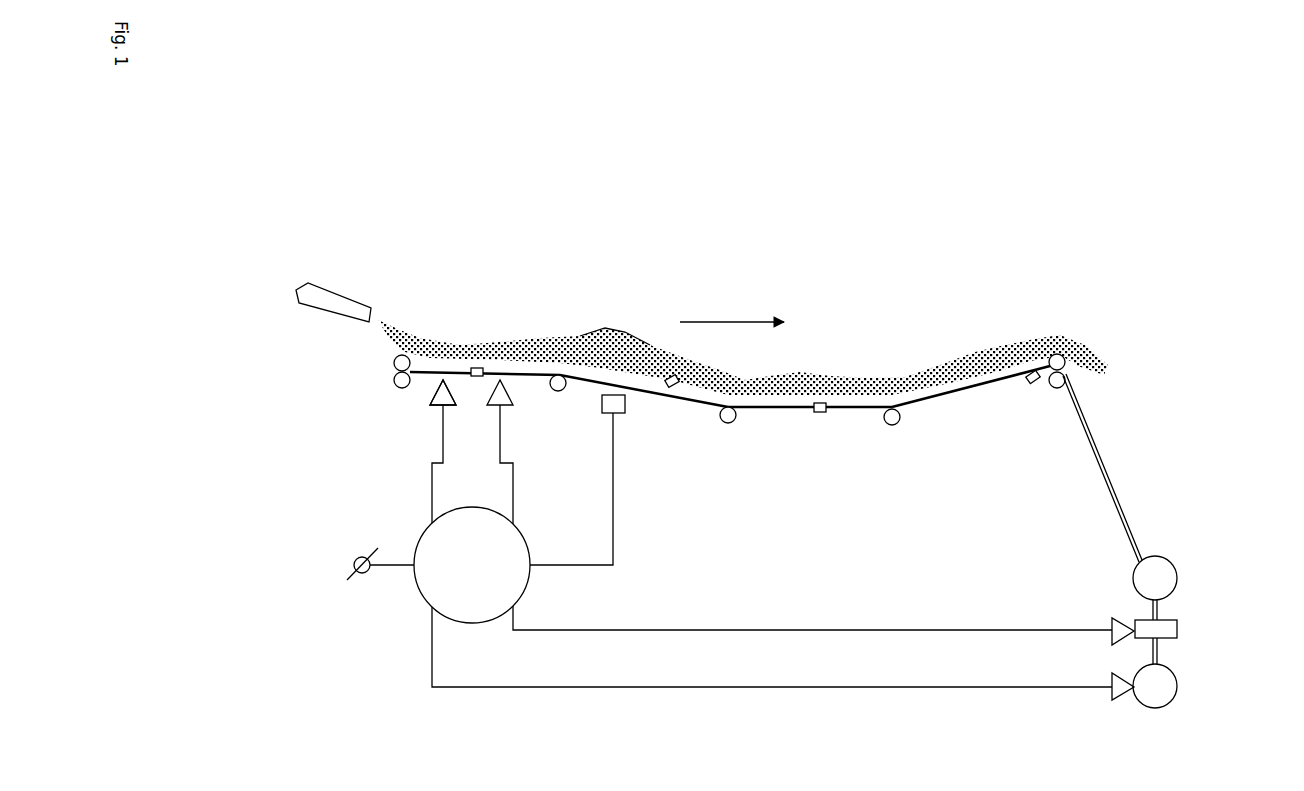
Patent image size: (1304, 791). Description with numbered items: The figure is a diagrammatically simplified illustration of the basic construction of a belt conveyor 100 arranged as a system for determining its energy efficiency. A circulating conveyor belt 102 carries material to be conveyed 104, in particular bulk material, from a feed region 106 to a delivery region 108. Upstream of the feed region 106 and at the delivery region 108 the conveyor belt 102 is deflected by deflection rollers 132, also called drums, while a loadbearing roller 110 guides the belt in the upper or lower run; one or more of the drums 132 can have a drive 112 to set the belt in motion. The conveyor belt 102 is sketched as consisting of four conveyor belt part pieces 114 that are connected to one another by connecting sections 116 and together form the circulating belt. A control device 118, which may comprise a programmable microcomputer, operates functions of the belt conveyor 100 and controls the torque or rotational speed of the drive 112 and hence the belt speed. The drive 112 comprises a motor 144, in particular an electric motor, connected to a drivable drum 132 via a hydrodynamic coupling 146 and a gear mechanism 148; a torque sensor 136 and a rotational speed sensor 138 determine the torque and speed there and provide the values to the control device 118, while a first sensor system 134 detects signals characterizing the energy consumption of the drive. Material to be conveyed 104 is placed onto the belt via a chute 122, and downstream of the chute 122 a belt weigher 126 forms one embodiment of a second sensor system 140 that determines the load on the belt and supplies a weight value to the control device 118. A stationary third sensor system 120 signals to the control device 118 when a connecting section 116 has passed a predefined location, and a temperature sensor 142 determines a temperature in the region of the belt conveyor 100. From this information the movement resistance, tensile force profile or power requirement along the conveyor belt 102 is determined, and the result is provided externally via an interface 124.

The belt conveyor 100 is at (383, 118).
The conveyor belt 102 is at (516, 355).
The material to be conveyed 104 is at (624, 340).
The feed region 106 is at (409, 292).
The delivery region 108 is at (1097, 290).
The loadbearing roller 110 is at (729, 424).
The drive 112 is at (1178, 530).
The conveyor belt part piece 114 is at (1037, 447).
The connecting section 116 is at (822, 402).
The control device 118 is at (472, 565).
The third sensor system 120 is at (503, 405).
The chute 122 is at (322, 284).
The interface 124 is at (362, 573).
The belt weigher 126 is at (435, 405).
The deflection roller 132 is at (393, 362).
The first sensor system 134 is at (1118, 702).
The torque sensor 136 is at (1072, 597).
The rotational speed sensor 138 is at (1118, 612).
The second sensor system 140 is at (387, 451).
The temperature sensor 142 is at (625, 405).
The motor 144 is at (1180, 686).
The hydrodynamic coupling 146 is at (1180, 630).
The gear mechanism 148 is at (1180, 578).